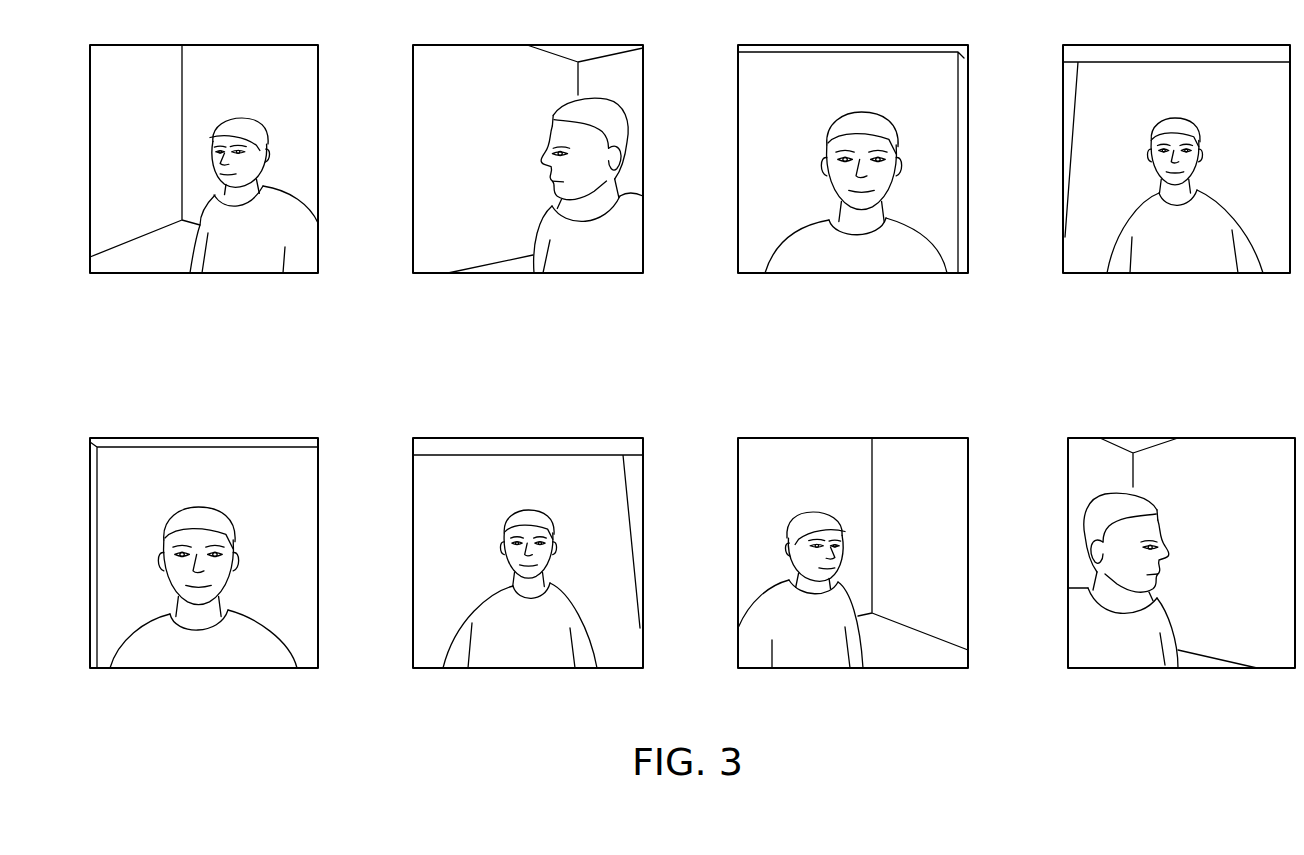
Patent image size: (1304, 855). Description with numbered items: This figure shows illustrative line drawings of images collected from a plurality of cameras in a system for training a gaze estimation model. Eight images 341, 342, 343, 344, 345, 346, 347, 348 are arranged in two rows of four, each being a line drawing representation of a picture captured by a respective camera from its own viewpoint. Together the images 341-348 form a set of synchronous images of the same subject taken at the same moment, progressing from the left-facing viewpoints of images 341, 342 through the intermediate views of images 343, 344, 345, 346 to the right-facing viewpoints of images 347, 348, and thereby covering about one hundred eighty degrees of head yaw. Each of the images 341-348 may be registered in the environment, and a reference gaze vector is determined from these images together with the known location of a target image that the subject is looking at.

The image 341 is at (211, 298).
The image 342 is at (536, 298).
The image 343 is at (862, 298).
The image 344 is at (1187, 298).
The image 345 is at (211, 690).
The image 346 is at (536, 690).
The image 347 is at (862, 690).
The image 348 is at (1187, 690).